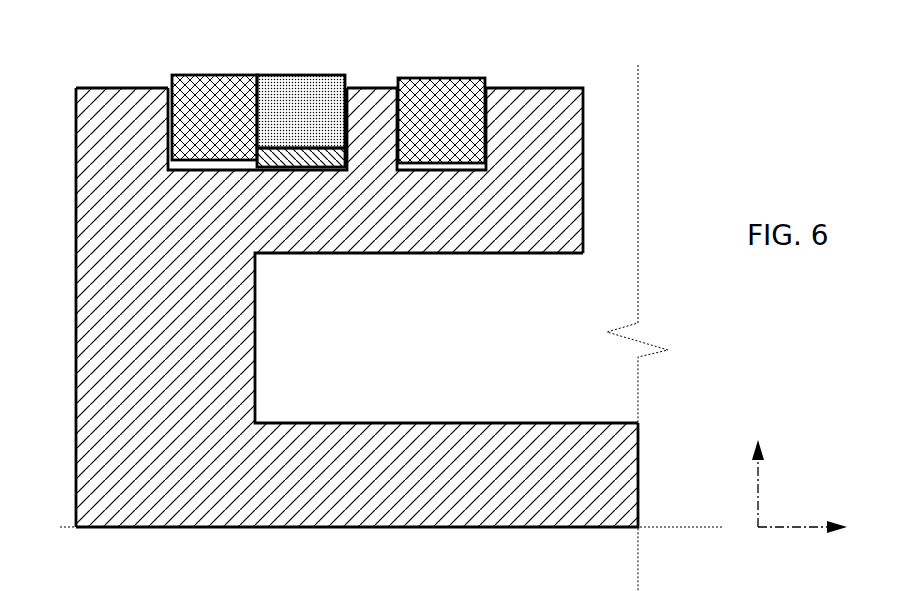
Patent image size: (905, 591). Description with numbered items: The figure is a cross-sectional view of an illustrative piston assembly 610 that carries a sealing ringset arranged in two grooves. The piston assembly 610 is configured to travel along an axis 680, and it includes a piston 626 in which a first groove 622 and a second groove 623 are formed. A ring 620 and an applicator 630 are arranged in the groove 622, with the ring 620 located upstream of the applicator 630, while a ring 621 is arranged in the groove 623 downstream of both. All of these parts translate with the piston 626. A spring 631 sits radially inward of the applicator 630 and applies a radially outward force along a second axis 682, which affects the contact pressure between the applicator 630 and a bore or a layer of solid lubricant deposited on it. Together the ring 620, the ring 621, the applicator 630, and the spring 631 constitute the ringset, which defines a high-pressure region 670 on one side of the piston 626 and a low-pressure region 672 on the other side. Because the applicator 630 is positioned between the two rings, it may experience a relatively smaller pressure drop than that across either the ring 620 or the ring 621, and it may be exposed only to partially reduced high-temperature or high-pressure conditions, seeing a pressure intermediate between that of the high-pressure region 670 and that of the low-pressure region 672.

The piston assembly 610 is at (576, 65).
The ring 620 is at (215, 73).
The ring 621 is at (432, 77).
The groove 622 is at (252, 172).
The groove 623 is at (437, 172).
The piston 626 is at (188, 336).
The applicator 630 is at (290, 73).
The spring 631 is at (333, 74).
The high-pressure region 670 is at (45, 388).
The low-pressure region 672 is at (370, 528).
The axis 680 is at (827, 528).
The axis 682 is at (759, 466).